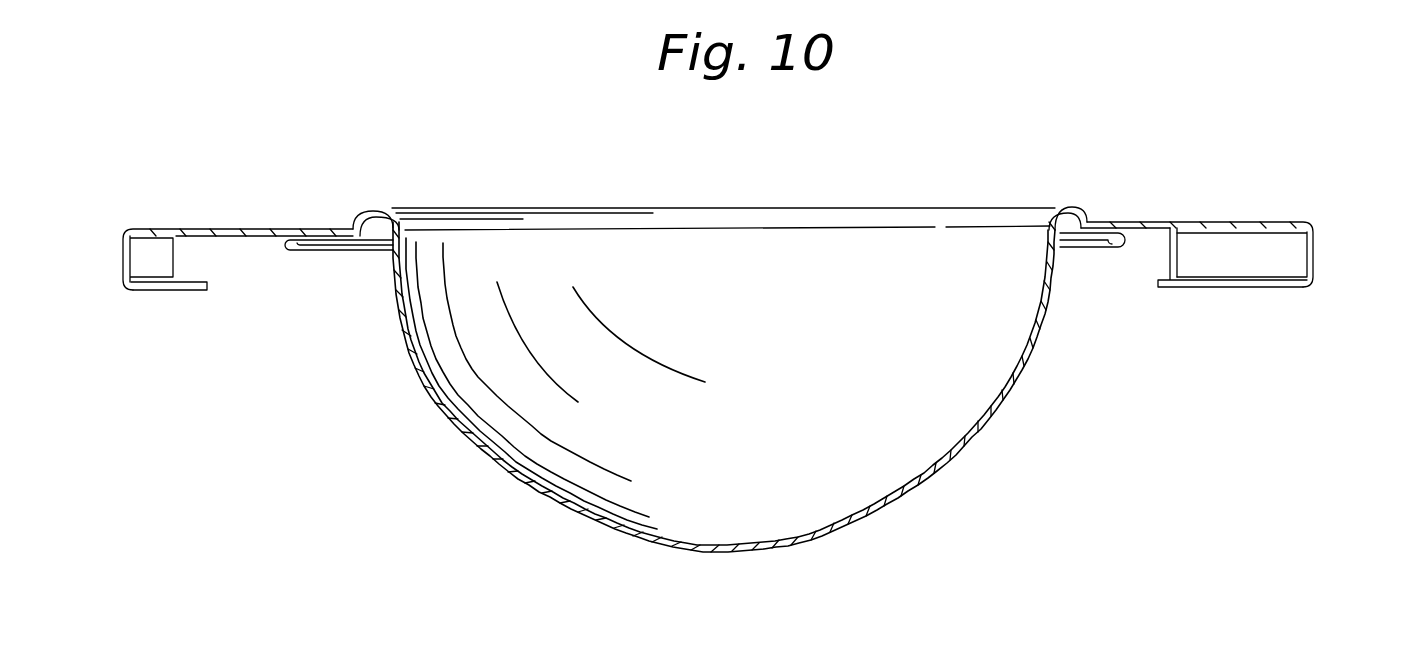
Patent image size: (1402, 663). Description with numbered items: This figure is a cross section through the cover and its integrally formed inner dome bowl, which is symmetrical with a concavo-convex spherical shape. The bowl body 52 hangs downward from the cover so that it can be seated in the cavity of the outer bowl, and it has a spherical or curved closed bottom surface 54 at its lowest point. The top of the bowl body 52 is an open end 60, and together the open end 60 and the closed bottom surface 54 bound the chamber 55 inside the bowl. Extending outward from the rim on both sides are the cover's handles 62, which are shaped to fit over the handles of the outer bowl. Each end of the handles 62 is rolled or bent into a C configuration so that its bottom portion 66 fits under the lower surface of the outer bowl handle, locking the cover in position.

The bowl body 52 is at (408, 347).
The closed bottom surface 54 is at (667, 552).
The chamber 55 is at (771, 364).
The open end 60 is at (1057, 208).
The handles 62 is at (124, 263).
The bottom portion 66 is at (192, 291).